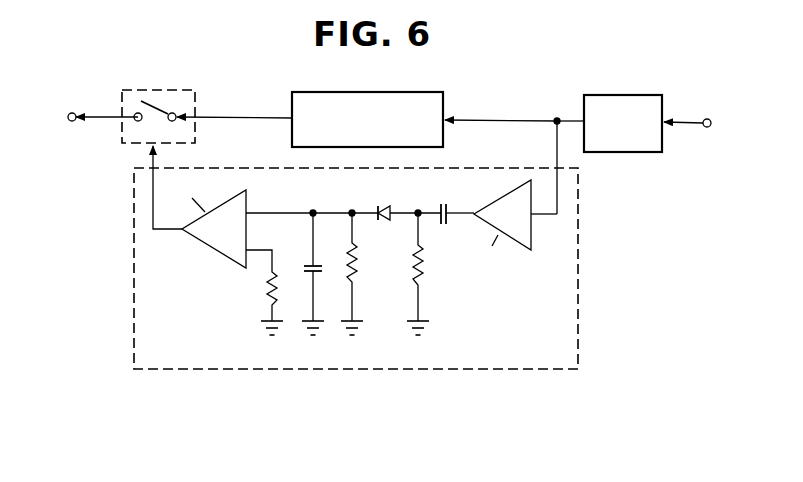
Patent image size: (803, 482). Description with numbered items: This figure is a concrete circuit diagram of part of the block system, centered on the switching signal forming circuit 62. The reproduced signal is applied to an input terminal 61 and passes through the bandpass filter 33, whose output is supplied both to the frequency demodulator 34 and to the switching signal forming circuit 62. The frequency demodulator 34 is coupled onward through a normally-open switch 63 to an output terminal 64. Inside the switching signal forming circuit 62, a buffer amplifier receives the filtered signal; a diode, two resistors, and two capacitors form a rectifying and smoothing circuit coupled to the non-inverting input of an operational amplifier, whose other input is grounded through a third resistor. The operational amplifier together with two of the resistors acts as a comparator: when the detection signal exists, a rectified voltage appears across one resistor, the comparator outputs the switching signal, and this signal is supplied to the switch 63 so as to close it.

The bandpass filter 33 is at (622, 95).
The frequency demodulator 34 is at (366, 91).
The input terminal 61 is at (707, 118).
The switching signal forming circuit 62 is at (335, 371).
The normally-open switch 63 is at (148, 89).
The output terminal 64 is at (73, 112).